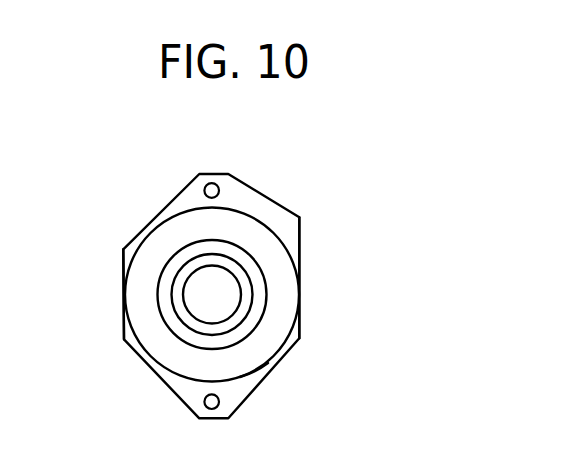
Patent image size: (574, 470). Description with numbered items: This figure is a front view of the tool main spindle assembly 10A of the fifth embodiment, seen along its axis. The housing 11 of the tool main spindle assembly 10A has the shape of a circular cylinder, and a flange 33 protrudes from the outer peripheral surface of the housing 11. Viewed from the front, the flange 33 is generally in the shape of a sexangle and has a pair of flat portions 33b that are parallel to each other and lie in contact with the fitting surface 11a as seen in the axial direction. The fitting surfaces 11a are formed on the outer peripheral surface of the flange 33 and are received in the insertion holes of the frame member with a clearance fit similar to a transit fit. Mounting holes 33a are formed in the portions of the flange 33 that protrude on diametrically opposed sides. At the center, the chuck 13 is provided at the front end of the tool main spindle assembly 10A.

The tool main spindle assembly 10A is at (312, 257).
The housing 11 is at (170, 355).
The fitting surfaces 11a is at (268, 363).
The chuck 13 is at (176, 297).
The flange 33 is at (286, 220).
The mounting holes 33a is at (214, 189).
The flat portions 33b is at (123, 320).